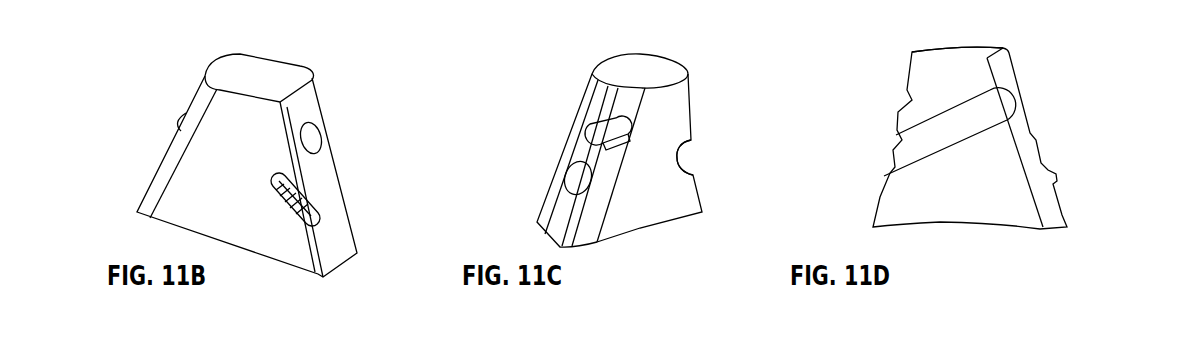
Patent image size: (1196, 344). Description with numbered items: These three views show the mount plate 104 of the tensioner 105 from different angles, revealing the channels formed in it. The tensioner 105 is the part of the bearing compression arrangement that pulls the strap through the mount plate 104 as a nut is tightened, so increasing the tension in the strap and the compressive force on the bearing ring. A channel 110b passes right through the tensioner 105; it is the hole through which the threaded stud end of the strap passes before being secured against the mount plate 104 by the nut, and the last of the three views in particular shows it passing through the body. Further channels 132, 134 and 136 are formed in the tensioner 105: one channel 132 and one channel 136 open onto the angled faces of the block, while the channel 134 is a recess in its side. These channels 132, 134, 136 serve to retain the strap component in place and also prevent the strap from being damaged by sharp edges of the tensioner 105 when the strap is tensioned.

In FIG. 11B, the mount plate 104 is at (232, 220).
In FIG. 11C, the mount plate 104 is at (662, 215).
In FIG. 11D, the mount plate 104 is at (1010, 213).
In FIG. 11B, the tensioner 105 is at (290, 91).
In FIG. 11C, the tensioner 105 is at (657, 87).
In FIG. 11D, the tensioner 105 is at (970, 86).
In FIG. 11B, the channel 110b is at (312, 133).
In FIG. 11C, the channel 110b is at (576, 176).
In FIG. 11D, the channel 110b is at (998, 107).
In FIG. 11B, the channel 132 is at (303, 200).
In FIG. 11C, the channel 134 is at (685, 158).
In FIG. 11C, the channel 136 is at (596, 130).